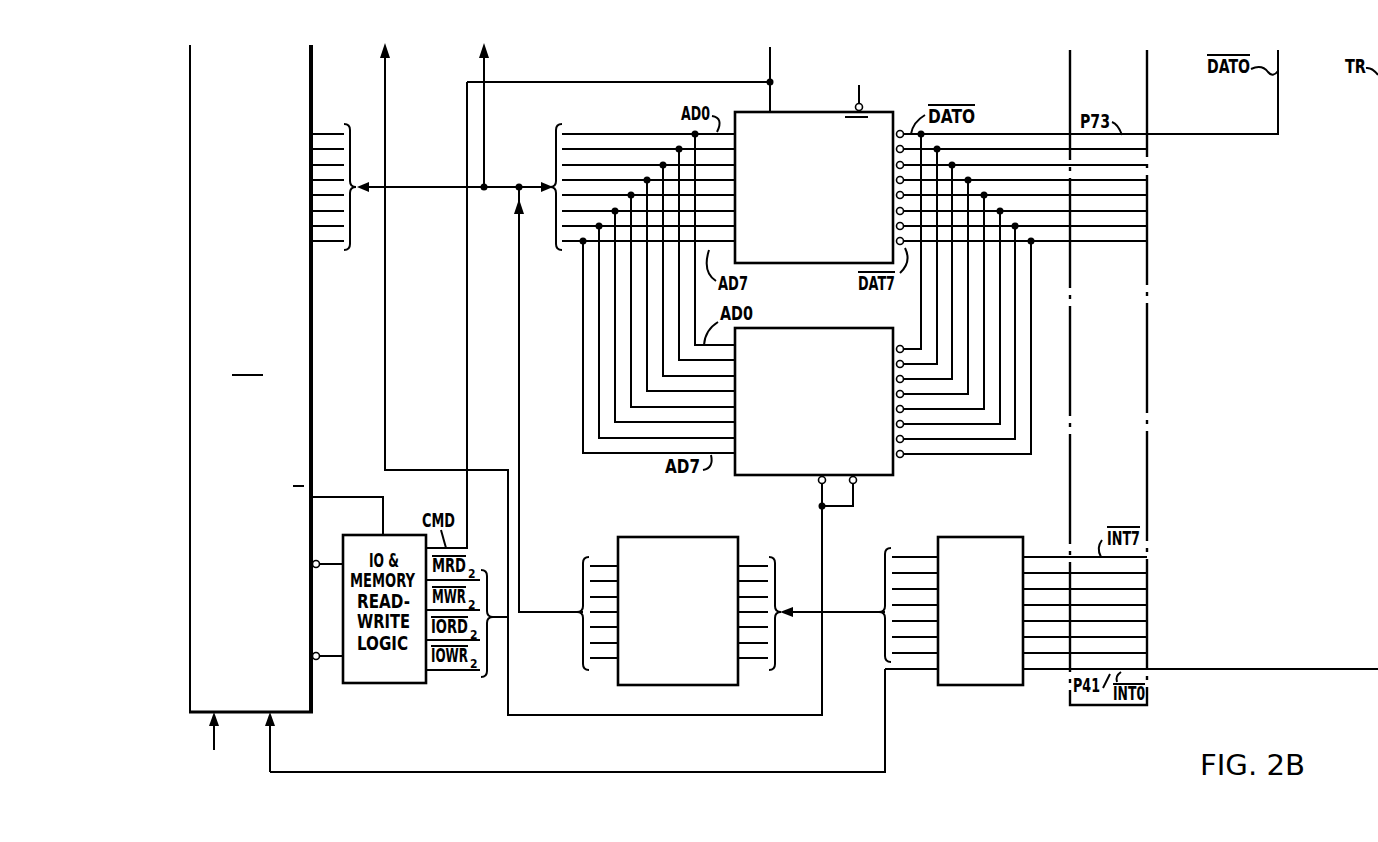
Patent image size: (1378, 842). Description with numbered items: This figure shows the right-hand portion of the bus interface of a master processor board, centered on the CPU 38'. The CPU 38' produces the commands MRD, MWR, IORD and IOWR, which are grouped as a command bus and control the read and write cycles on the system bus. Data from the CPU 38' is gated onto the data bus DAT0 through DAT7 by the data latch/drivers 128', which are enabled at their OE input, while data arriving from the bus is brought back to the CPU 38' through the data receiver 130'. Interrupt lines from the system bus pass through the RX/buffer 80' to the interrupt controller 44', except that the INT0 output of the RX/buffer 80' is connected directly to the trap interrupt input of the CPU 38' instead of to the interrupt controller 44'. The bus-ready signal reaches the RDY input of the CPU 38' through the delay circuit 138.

The CPU 38' is at (273, 383).
The data latch/drivers 128' is at (914, 156).
The data receiver 130' is at (819, 404).
The interrupt controller 44' is at (679, 597).
The RX/buffer 80' is at (1128, 597).
The delay circuit 138 is at (534, 731).